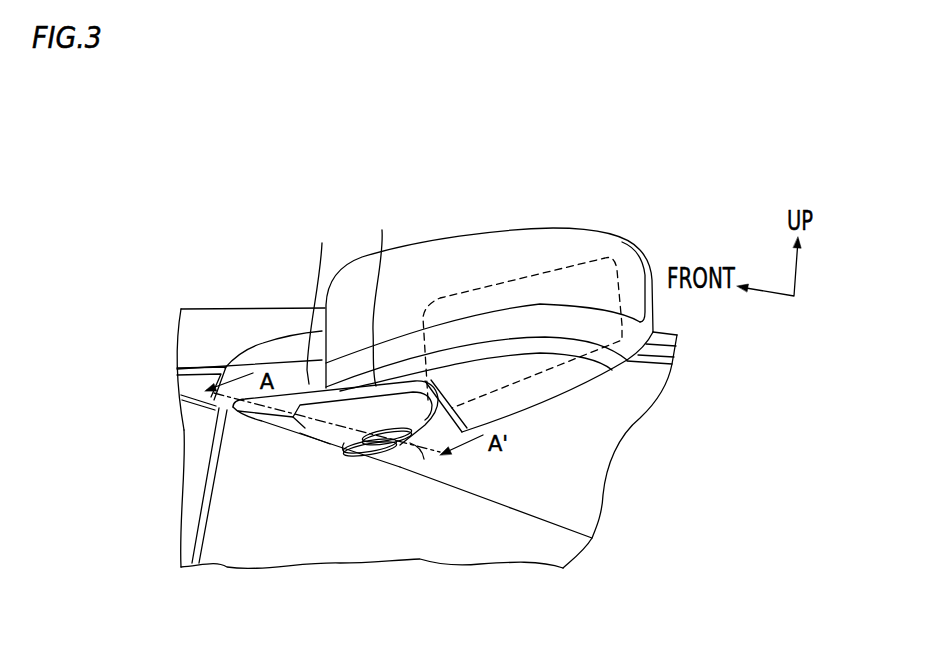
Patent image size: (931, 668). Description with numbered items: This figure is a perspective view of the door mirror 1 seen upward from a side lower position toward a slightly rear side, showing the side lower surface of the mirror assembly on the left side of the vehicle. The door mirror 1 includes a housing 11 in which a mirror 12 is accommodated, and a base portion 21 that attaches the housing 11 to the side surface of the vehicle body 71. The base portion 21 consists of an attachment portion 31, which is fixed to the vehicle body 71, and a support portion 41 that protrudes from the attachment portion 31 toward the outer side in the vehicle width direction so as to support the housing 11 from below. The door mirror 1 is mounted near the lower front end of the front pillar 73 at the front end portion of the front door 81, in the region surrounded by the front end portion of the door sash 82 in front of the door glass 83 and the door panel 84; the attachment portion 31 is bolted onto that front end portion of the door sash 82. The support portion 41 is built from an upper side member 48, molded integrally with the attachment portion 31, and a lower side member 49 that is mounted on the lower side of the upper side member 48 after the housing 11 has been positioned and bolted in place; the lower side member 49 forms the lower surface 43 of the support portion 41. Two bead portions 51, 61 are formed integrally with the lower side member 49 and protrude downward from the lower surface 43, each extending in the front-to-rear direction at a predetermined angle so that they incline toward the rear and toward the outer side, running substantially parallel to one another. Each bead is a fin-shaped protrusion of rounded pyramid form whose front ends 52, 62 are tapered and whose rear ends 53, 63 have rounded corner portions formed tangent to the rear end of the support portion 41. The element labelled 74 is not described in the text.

The door mirror 1 is at (668, 246).
The housing 11 is at (552, 229).
The mirror 12 is at (613, 258).
The base portion 21 is at (243, 421).
The attachment portion 31 is at (290, 377).
The support portion 41 is at (318, 303).
The lower surface 43 is at (312, 438).
The upper side member 48 is at (381, 295).
The lower side member 49 is at (305, 428).
The bead portion 51 is at (443, 420).
The front end 52 is at (362, 420).
The rear end 53 is at (412, 452).
The bead portion 61 is at (370, 452).
The front end 62 is at (343, 445).
The rear end 63 is at (396, 450).
The vehicle body 71 is at (207, 305).
The front pillar 73 is at (292, 320).
The side panel 74 is at (196, 438).
The front door 81 is at (192, 501).
The door sash 82 is at (662, 353).
The door glass 83 is at (618, 421).
The door panel 84 is at (572, 548).